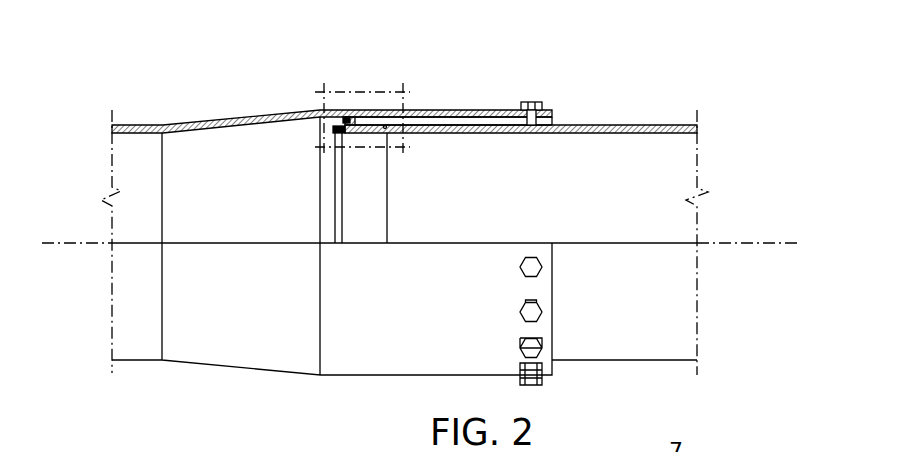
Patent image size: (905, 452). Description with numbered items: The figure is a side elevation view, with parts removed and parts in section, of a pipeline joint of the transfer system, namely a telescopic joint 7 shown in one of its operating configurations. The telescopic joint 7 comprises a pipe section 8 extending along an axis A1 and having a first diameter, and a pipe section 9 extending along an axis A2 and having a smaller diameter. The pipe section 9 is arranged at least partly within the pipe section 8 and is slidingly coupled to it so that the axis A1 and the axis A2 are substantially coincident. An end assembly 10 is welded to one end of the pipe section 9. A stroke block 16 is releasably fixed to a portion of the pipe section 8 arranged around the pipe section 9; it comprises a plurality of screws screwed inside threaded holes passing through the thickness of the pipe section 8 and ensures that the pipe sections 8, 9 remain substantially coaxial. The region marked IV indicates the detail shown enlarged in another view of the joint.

The telescopic joint 7 is at (502, 82).
The pipe section 8 is at (465, 109).
The pipe section 9 is at (660, 125).
The end assembly 10 is at (362, 138).
The stroke block 16 is at (542, 93).
The axis A1 is at (57, 242).
The axis A2 is at (755, 242).
The section IV is at (350, 92).